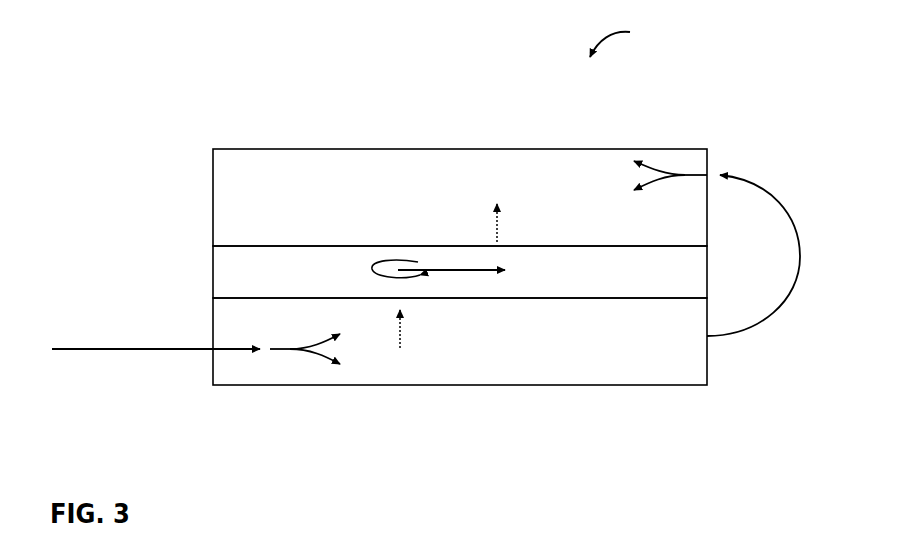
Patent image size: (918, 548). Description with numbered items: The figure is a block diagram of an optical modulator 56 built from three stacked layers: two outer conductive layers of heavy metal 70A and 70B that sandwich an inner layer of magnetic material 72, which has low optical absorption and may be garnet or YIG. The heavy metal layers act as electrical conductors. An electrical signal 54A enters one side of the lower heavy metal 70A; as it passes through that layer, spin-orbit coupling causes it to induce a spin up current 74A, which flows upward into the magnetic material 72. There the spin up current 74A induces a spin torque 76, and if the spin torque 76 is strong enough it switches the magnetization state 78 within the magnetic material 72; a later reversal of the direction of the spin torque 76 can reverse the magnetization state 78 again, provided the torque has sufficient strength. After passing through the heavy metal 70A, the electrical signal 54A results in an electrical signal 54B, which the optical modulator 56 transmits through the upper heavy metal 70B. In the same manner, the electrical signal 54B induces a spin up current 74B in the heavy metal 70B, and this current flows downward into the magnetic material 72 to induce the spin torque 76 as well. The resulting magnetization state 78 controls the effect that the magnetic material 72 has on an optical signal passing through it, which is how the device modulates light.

The optical modulator 56 is at (691, 39).
The heavy metal 70B is at (252, 149).
The heavy metal 70A is at (582, 385).
The magnetic material 72 is at (213, 257).
The electrical signal 54A is at (82, 349).
The electrical signal 54B is at (765, 318).
The spin up current 74A is at (400, 348).
The spin up current 74B is at (500, 232).
The spin torque 76 is at (403, 262).
The magnetization state 78 is at (462, 271).